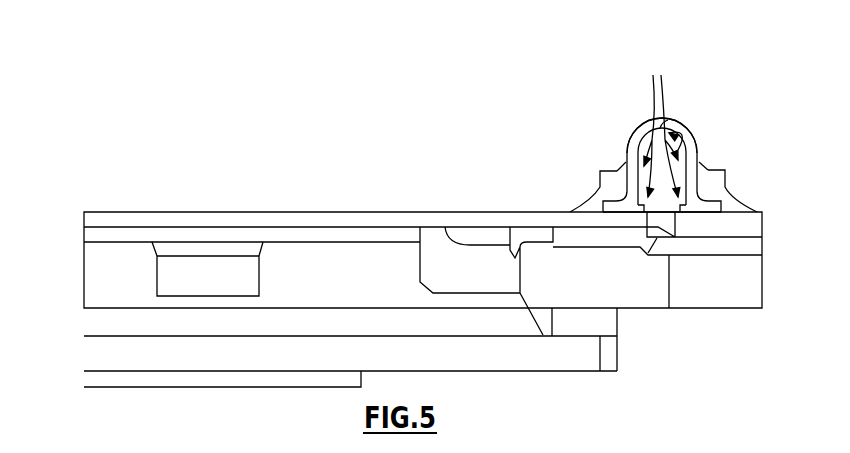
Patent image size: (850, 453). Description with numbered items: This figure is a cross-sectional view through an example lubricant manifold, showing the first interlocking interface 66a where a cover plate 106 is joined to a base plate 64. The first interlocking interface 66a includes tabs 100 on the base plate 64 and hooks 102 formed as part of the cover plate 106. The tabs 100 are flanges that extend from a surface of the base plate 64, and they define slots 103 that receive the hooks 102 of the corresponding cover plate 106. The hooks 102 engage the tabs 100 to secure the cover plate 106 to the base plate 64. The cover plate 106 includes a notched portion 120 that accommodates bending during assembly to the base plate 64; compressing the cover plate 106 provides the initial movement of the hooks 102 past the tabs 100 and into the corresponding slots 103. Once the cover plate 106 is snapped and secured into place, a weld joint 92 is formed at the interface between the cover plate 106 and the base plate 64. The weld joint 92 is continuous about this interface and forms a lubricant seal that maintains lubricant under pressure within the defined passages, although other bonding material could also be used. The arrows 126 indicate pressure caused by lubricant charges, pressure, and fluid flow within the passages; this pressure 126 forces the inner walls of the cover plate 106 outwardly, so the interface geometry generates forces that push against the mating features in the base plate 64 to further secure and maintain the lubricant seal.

The base plate 64 is at (386, 252).
The first interlocking interface 66a is at (732, 121).
The weld joint 92 is at (619, 161).
The tabs 100 is at (600, 187).
The hooks 102 is at (627, 212).
The slots 103 is at (603, 210).
The cover plate 106 is at (641, 131).
The notched portion 120 is at (670, 137).
The pressure arrows 126 is at (655, 135).